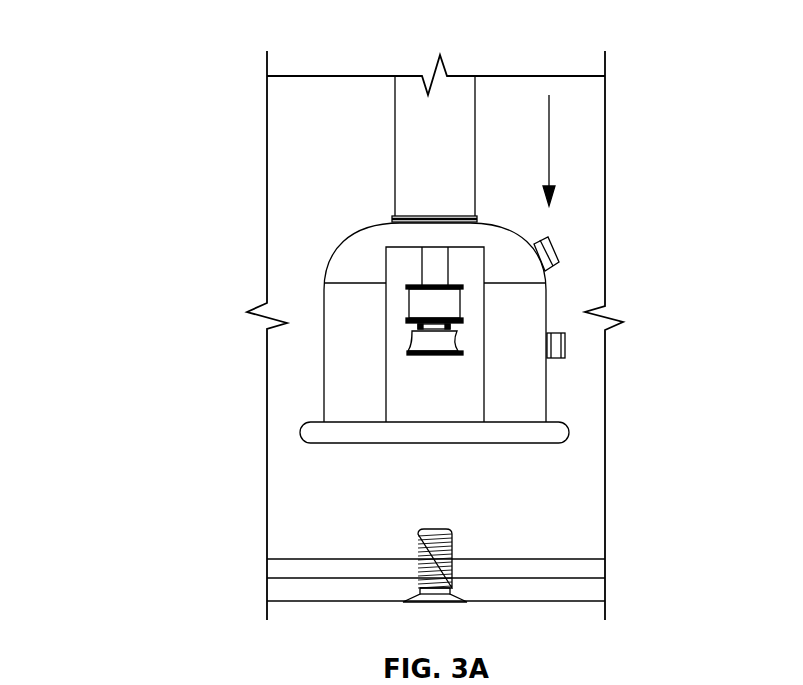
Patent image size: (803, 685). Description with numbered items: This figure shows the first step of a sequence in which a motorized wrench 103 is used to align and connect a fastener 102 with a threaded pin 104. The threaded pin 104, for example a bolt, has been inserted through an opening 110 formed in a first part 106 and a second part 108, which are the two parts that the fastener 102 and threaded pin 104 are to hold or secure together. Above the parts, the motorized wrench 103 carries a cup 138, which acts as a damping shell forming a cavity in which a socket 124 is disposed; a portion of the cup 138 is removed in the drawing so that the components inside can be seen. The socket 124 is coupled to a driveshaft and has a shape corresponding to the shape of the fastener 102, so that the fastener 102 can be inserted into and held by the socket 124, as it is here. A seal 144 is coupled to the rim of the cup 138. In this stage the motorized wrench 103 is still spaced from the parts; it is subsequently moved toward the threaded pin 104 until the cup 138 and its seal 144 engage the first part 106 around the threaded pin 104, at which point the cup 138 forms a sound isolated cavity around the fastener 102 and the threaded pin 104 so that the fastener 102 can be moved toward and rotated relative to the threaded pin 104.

The motorized wrench 103 is at (142, 66).
The fastener 102 is at (448, 342).
The threaded pin 104 is at (454, 550).
The first part 106 is at (592, 568).
The second part 108 is at (587, 594).
The opening 110 is at (412, 561).
The socket 124 is at (445, 303).
The cup 138 is at (527, 321).
The seal 144 is at (547, 433).